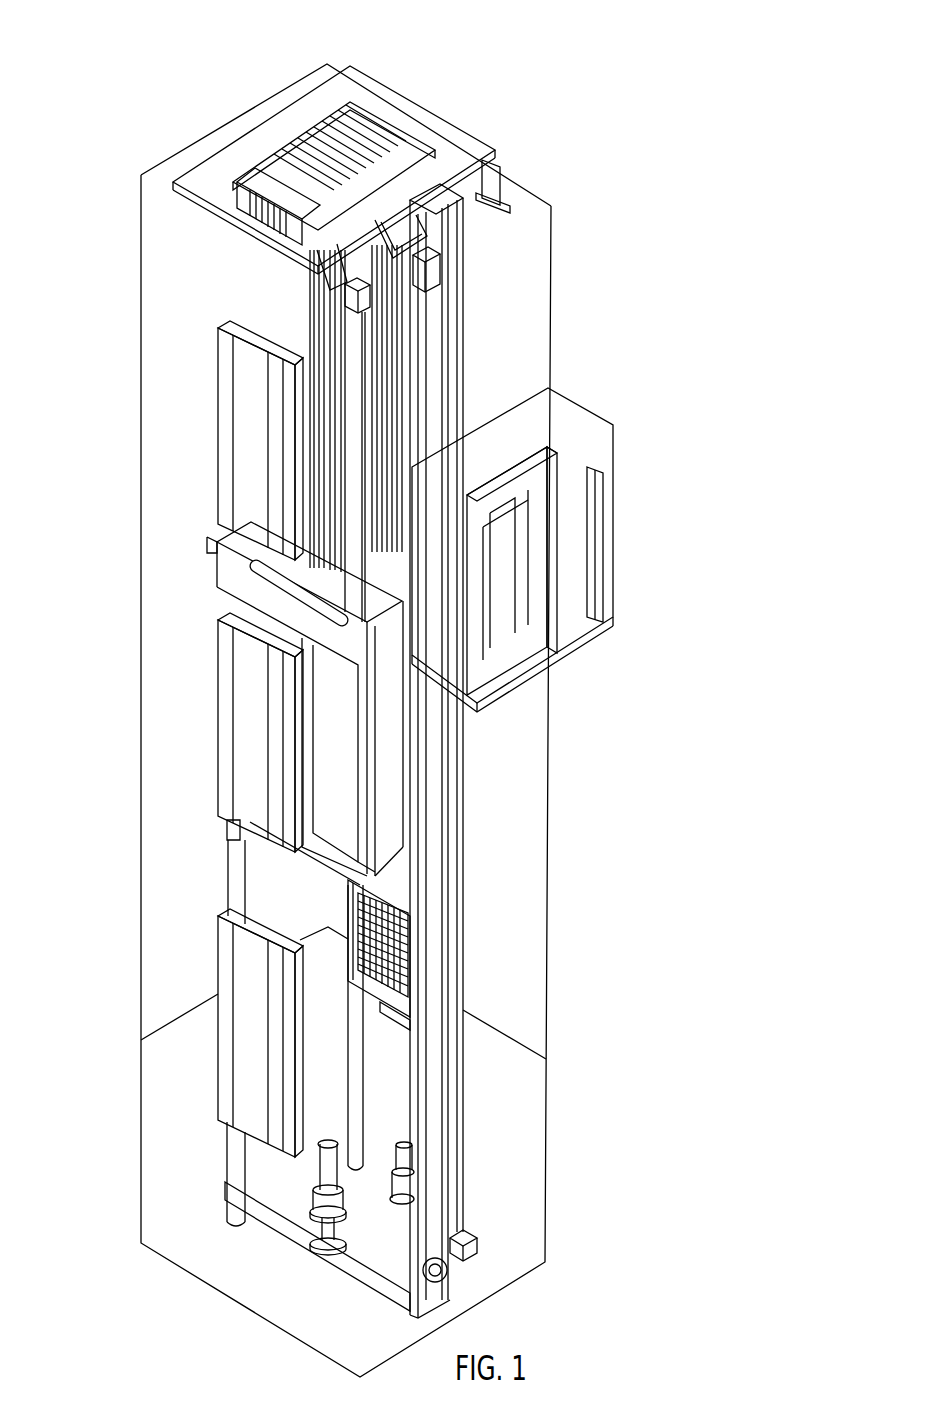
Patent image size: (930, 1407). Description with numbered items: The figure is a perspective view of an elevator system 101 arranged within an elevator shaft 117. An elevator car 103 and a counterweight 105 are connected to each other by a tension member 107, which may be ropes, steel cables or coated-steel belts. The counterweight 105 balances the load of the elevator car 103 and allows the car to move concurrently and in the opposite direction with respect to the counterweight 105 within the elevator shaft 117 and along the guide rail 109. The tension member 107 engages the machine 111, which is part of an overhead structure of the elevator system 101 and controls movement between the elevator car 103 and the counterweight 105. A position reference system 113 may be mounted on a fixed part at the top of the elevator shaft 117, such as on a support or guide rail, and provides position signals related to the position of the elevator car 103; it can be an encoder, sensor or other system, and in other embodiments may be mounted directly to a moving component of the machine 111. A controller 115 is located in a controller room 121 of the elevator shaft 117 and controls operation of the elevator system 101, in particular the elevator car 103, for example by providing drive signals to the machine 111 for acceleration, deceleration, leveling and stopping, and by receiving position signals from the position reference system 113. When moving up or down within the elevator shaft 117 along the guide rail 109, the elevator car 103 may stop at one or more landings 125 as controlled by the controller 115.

The elevator system 101 is at (578, 88).
The elevator car 103 is at (343, 766).
The counterweight 105 is at (400, 963).
The tension member 107 is at (355, 428).
The guide rail 109 is at (430, 882).
The machine 111 is at (256, 176).
The position reference system 113 is at (433, 267).
The controller 115 is at (548, 562).
The elevator shaft 117 is at (197, 886).
The controller room 121 is at (628, 412).
The landings 125 is at (218, 430).